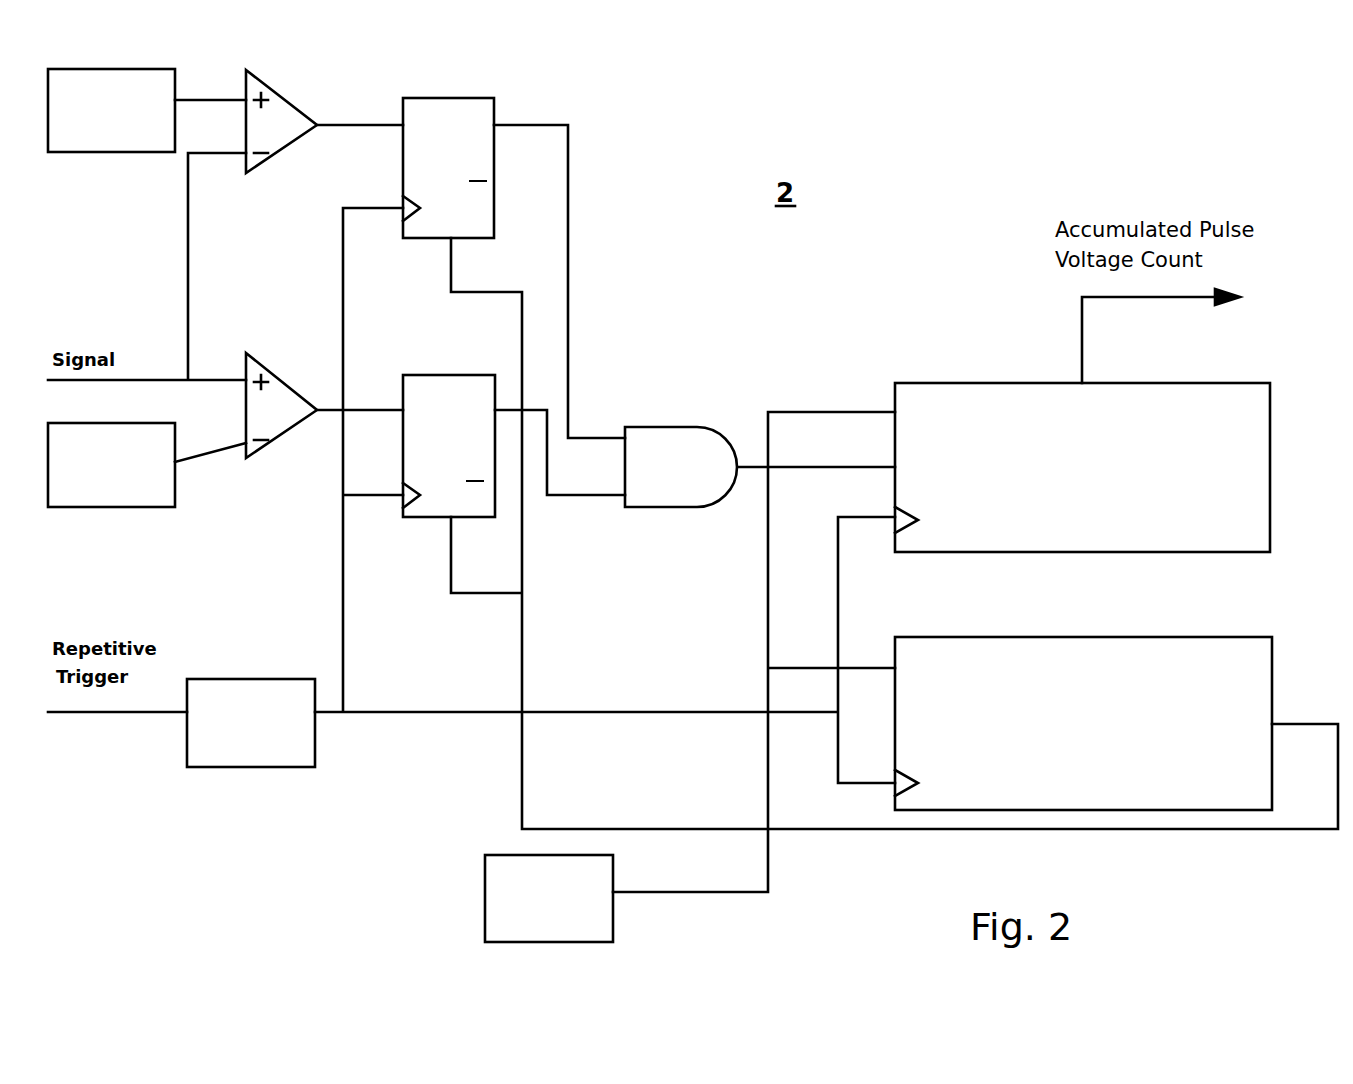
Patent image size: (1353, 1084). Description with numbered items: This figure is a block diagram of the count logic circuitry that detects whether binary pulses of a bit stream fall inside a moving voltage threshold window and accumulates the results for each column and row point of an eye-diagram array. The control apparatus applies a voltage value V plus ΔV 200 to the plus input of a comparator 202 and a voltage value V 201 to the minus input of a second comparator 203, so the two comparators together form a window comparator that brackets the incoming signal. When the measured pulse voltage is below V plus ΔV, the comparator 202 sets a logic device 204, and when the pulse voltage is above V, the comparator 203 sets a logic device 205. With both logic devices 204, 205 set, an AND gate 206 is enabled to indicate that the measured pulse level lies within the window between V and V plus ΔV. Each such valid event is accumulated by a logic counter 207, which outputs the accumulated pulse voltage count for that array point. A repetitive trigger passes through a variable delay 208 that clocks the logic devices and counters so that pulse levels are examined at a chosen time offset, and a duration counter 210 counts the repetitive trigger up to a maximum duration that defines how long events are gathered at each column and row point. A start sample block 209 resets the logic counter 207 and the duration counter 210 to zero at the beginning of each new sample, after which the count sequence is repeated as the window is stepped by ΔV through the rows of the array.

The voltage V+ΔV 200 is at (130, 152).
The voltage V 201 is at (127, 507).
The comparator 202 is at (280, 92).
The comparator 203 is at (283, 378).
The logic device 204 is at (453, 98).
The logic device 205 is at (450, 375).
The AND gate 206 is at (672, 427).
The logic counter 207 is at (1000, 383).
The variable delay 208 is at (262, 679).
The start sample 209 is at (485, 866).
The duration counter 210 is at (1003, 637).